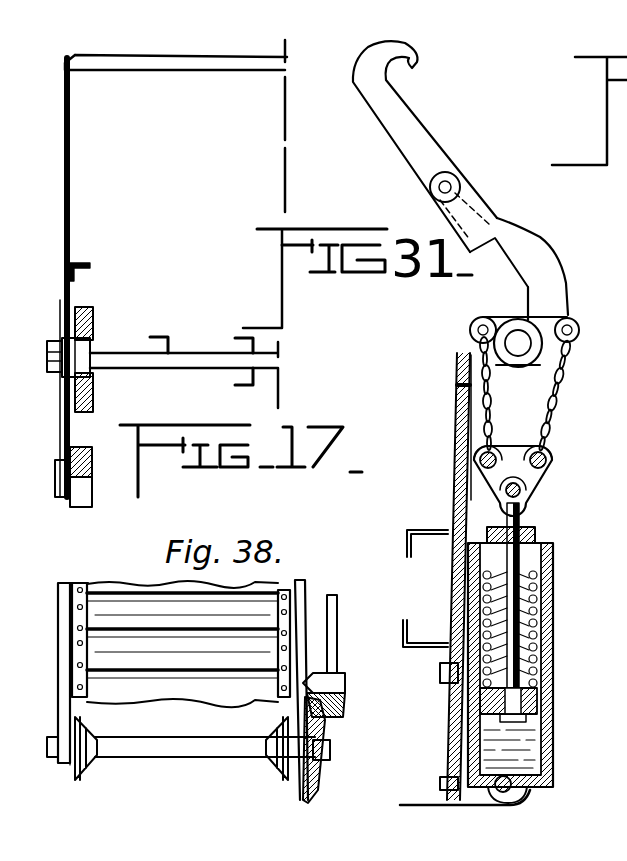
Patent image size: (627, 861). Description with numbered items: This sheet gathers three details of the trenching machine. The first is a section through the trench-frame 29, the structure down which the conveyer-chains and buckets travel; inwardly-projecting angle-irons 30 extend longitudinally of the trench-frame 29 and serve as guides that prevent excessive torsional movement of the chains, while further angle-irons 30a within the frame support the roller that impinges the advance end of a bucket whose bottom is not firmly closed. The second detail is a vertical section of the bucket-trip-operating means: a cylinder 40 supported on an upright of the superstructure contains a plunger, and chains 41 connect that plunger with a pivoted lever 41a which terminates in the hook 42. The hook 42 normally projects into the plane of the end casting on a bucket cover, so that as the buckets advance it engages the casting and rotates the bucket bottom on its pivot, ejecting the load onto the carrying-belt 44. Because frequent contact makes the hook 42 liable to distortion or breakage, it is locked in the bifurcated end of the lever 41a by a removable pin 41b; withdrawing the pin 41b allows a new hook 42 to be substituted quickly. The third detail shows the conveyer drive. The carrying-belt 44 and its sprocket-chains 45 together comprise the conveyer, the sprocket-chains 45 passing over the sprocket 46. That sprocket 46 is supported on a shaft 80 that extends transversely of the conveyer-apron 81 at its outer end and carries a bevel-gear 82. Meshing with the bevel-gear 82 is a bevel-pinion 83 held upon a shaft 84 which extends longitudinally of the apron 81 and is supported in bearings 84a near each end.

In FIG. 17, the trench-frame 29 is at (62, 236).
In FIG. 17, the angle-irons 30 is at (66, 270).
In FIG. 17, the angle-irons 30a is at (241, 398).
In FIG. 31, the cylinder 40 is at (553, 673).
In FIG. 31, the chains 41 is at (478, 405).
In FIG. 31, the pivoted lever 41a is at (556, 266).
In FIG. 31, the removable pin 41b is at (460, 186).
In FIG. 31, the hook 42 is at (425, 128).
In FIG. 38, the carrying-belt 44 is at (130, 607).
In FIG. 38, the sprocket-chains 45 is at (62, 657).
In FIG. 38, the sprocket 46 is at (82, 777).
In FIG. 38, the shaft 80 is at (197, 748).
In FIG. 38, the conveyer-apron 81 is at (182, 640).
In FIG. 38, the bevel-gear 82 is at (318, 782).
In FIG. 38, the bevel-pinion 83 is at (347, 706).
In FIG. 38, the shaft 84 is at (338, 614).
In FIG. 38, the bearings 84a is at (346, 684).